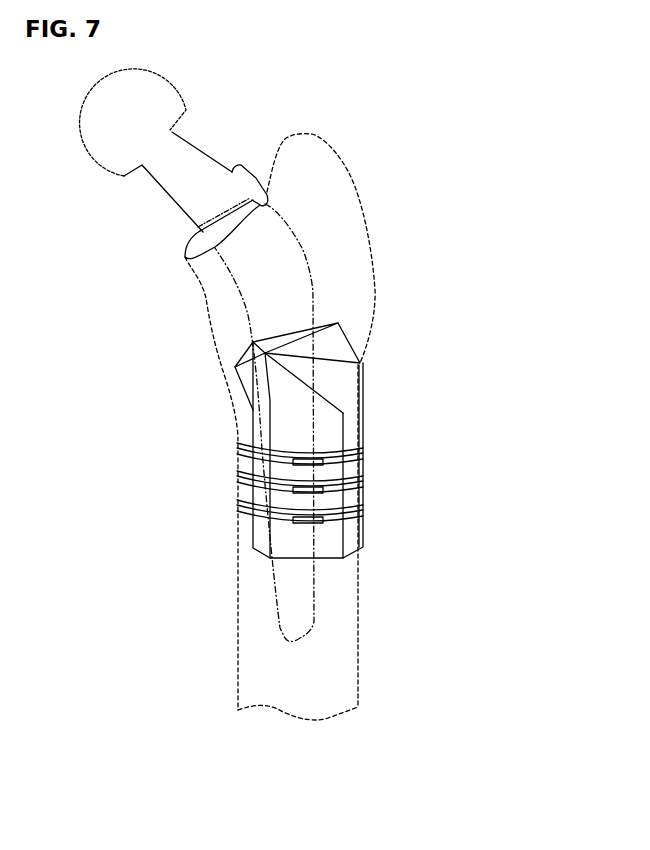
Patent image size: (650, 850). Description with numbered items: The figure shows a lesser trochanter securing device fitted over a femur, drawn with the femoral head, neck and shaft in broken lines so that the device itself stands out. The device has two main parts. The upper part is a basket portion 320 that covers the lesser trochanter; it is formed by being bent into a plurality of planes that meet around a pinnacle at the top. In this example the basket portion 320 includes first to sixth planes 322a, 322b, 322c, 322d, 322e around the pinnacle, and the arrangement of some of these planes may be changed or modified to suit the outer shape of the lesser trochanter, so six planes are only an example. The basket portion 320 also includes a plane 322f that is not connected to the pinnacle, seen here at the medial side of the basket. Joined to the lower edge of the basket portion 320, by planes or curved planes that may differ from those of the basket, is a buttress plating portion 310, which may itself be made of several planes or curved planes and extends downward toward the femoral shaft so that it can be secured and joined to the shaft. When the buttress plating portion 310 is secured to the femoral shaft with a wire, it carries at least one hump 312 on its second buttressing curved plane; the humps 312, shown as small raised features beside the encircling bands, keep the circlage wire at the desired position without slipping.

The buttress plating portion 310 is at (348, 556).
The hump 312 is at (330, 519).
The basket portion 320 is at (440, 305).
The first plane 322a is at (277, 403).
The second plane 322b is at (332, 380).
The third plane 322c is at (349, 340).
The fourth plane 322d is at (274, 338).
The fifth plane 322e is at (236, 364).
The plane not connected to the pinnacle 322f is at (239, 371).